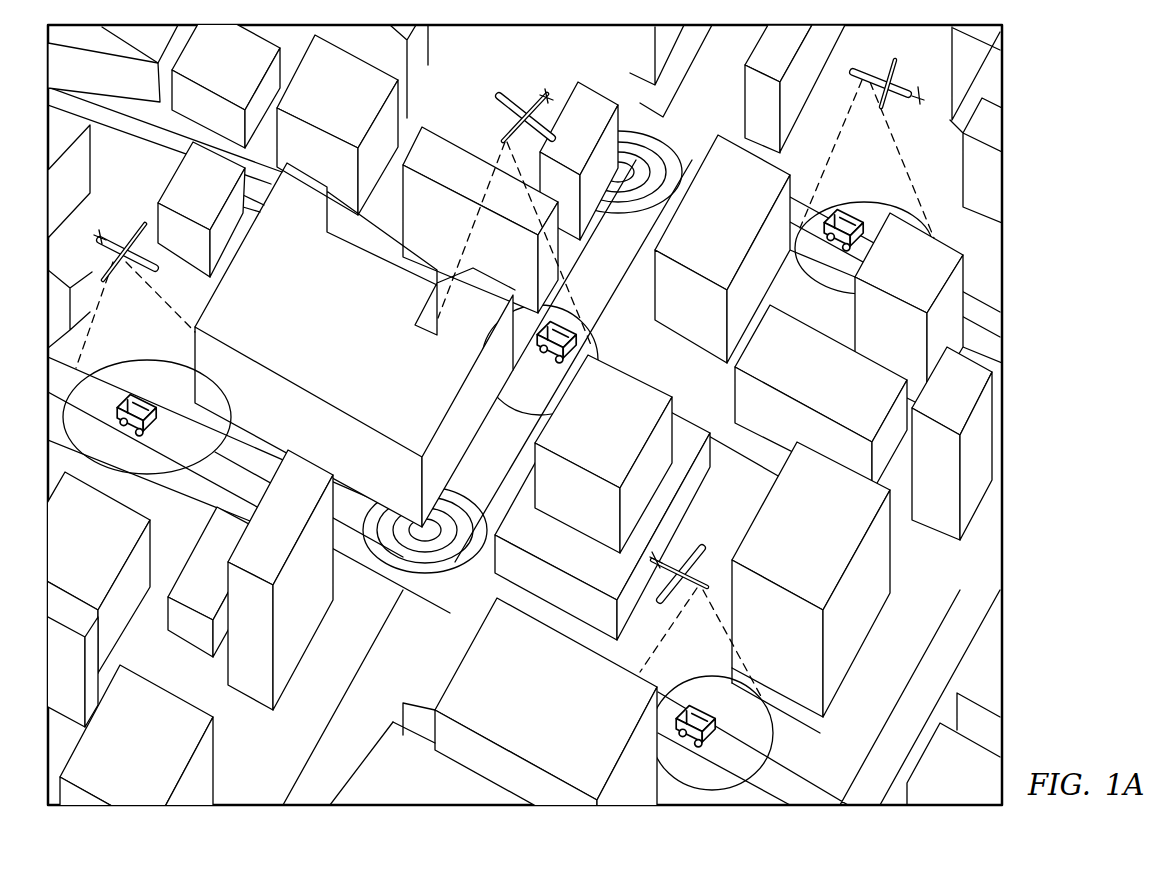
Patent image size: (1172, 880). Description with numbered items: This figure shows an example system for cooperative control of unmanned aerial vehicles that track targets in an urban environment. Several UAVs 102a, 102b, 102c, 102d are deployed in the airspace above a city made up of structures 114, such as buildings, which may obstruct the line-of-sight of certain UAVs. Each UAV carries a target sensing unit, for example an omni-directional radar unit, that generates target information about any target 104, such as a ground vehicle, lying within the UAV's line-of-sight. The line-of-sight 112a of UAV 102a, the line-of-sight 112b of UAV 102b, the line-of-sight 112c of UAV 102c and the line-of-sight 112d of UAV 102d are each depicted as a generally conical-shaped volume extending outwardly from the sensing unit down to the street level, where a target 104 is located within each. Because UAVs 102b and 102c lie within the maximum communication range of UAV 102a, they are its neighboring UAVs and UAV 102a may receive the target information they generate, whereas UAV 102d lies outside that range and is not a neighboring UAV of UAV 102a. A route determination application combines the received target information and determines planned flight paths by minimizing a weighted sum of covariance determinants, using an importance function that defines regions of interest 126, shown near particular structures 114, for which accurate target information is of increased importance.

The UAV 102a is at (124, 222).
The UAV 102b is at (500, 97).
The UAV 102c is at (700, 548).
The UAV 102d is at (926, 58).
The target 104 is at (137, 408).
The line-of-sight 112a is at (110, 480).
The line-of-sight 112b is at (519, 400).
The line-of-sight 112c is at (784, 738).
The line-of-sight 112d is at (901, 195).
The structure 114 is at (303, 88).
The region of interest 126 is at (400, 564).